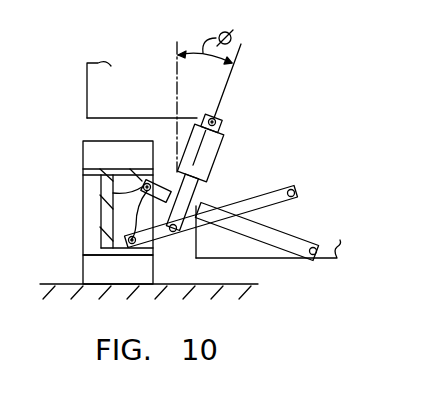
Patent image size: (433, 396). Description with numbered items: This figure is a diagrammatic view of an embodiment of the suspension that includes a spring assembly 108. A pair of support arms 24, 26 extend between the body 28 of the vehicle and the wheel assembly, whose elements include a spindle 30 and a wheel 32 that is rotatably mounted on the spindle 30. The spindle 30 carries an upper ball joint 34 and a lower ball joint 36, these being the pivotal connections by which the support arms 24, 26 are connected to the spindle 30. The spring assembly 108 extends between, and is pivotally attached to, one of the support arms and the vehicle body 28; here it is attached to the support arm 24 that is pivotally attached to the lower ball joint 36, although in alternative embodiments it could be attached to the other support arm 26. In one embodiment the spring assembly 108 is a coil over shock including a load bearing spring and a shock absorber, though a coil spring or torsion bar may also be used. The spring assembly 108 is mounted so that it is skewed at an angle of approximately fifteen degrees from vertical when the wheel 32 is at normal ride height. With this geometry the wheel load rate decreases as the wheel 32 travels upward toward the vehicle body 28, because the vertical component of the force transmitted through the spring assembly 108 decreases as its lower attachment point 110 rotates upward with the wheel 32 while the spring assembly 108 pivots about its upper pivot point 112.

The support arm 24 is at (263, 199).
The support arm 26 is at (288, 237).
The vehicle body 28 is at (86, 102).
The spindle 30 is at (120, 217).
The wheel 32 is at (100, 273).
The upper ball joint 34 is at (142, 180).
The lower ball joint 36 is at (129, 245).
The spring assembly 108 is at (221, 145).
The lower attachment point 110 is at (176, 233).
The upper pivot point 112 is at (217, 118).